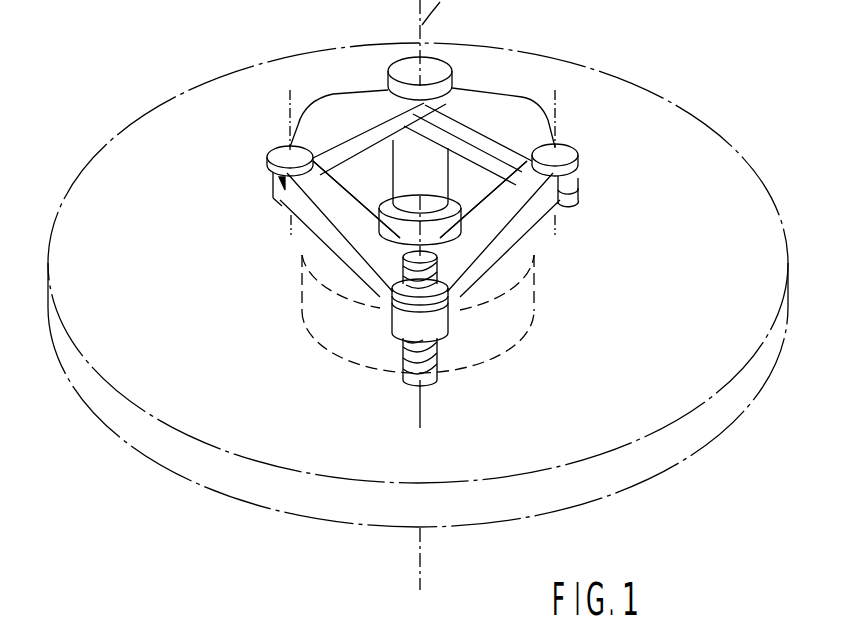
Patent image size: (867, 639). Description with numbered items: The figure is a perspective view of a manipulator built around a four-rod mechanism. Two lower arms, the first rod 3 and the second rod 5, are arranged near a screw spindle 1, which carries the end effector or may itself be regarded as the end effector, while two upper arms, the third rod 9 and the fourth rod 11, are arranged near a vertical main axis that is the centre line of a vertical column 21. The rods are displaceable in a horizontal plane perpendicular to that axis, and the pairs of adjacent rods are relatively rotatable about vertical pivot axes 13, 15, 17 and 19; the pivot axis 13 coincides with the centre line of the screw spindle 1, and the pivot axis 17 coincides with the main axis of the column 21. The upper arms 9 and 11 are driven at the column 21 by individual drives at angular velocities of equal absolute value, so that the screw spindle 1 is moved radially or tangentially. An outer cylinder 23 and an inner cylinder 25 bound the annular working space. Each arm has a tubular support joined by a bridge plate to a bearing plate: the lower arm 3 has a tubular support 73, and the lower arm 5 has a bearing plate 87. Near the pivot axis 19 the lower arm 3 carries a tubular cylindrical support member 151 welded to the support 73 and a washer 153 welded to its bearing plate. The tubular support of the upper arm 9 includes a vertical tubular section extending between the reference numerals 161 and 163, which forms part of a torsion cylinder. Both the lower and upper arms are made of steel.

The screw spindle 1 is at (403, 360).
The lower arm 3 is at (513, 205).
The tubular support 73 is at (483, 199).
The lower arm 5 is at (330, 204).
The bearing plate 87 is at (356, 199).
The upper arm 9 is at (500, 116).
The upper arm 11 is at (348, 118).
The pivot axis 13 is at (425, 408).
The pivot axis 15 is at (288, 114).
The pivot axis 17 is at (427, 562).
The pivot axis 19 is at (557, 108).
The vertical column 21 is at (444, 165).
The outer cylinder 23 is at (203, 84).
The inner cylinder 25 is at (328, 306).
The tubular cylindrical support member 151 is at (563, 184).
The washer 153 is at (574, 200).
The tubular section boundary marker 161 is at (280, 190).
The tubular section boundary marker 163 is at (273, 163).